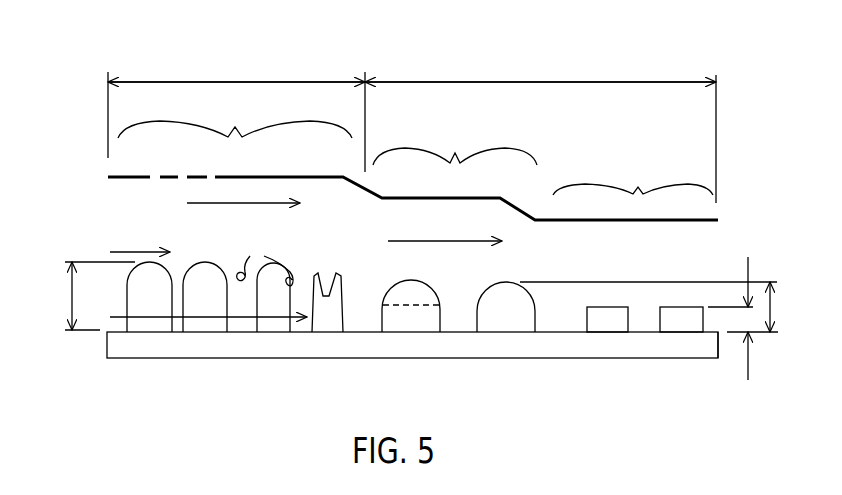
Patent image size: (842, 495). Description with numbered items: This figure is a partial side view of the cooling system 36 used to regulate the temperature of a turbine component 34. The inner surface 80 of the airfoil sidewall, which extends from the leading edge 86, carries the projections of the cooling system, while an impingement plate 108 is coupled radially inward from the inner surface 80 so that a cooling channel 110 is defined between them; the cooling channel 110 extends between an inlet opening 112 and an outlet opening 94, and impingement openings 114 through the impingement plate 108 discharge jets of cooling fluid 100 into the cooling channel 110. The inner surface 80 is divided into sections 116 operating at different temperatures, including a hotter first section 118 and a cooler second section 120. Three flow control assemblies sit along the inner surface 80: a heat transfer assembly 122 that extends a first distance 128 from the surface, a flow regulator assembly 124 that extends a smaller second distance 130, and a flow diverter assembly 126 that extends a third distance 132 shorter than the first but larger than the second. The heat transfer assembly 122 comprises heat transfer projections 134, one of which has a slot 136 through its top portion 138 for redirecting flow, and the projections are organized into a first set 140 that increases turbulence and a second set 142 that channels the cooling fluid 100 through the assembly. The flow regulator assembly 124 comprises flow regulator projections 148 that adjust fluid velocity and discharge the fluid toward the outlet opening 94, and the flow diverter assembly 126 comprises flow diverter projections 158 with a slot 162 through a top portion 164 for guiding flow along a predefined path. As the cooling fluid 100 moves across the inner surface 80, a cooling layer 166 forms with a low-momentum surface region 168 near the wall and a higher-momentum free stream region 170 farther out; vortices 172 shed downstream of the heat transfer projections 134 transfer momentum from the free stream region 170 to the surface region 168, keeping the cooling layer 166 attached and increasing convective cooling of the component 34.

The component 34 is at (730, 128).
The cooling system 36 is at (552, 177).
The inner surface 80 is at (372, 328).
The leading edge 86 is at (718, 356).
The outlet opening 94 is at (757, 263).
The cooling fluid 100 is at (412, 241).
The impingement plate 108 is at (421, 198).
The cooling channel 110 is at (92, 192).
The inlet opening 112 is at (80, 243).
The impingement opening 114 is at (153, 174).
The section 116 is at (207, 82).
The first section 118 is at (273, 82).
The second section 120 is at (560, 82).
The heat transfer assembly 122 is at (235, 120).
The flow regulator assembly 124 is at (633, 178).
The flow diverter assembly 126 is at (455, 145).
The first distance 128 is at (70, 296).
The second distance 130 is at (773, 303).
The third distance 132 is at (752, 360).
The heat transfer projection 134 is at (168, 277).
The slot 136 is at (332, 268).
The top portion 138 is at (315, 274).
The first set 140 is at (213, 246).
The second set 142 is at (341, 236).
The flow regulator projection 148 is at (600, 307).
The flow diverter projection 158 is at (441, 323).
The slot 162 is at (407, 278).
The top portion 164 is at (433, 288).
The cooling layer 166 is at (163, 249).
The surface region 168 is at (178, 318).
The free stream region 170 is at (213, 204).
The vortices 172 is at (265, 259).